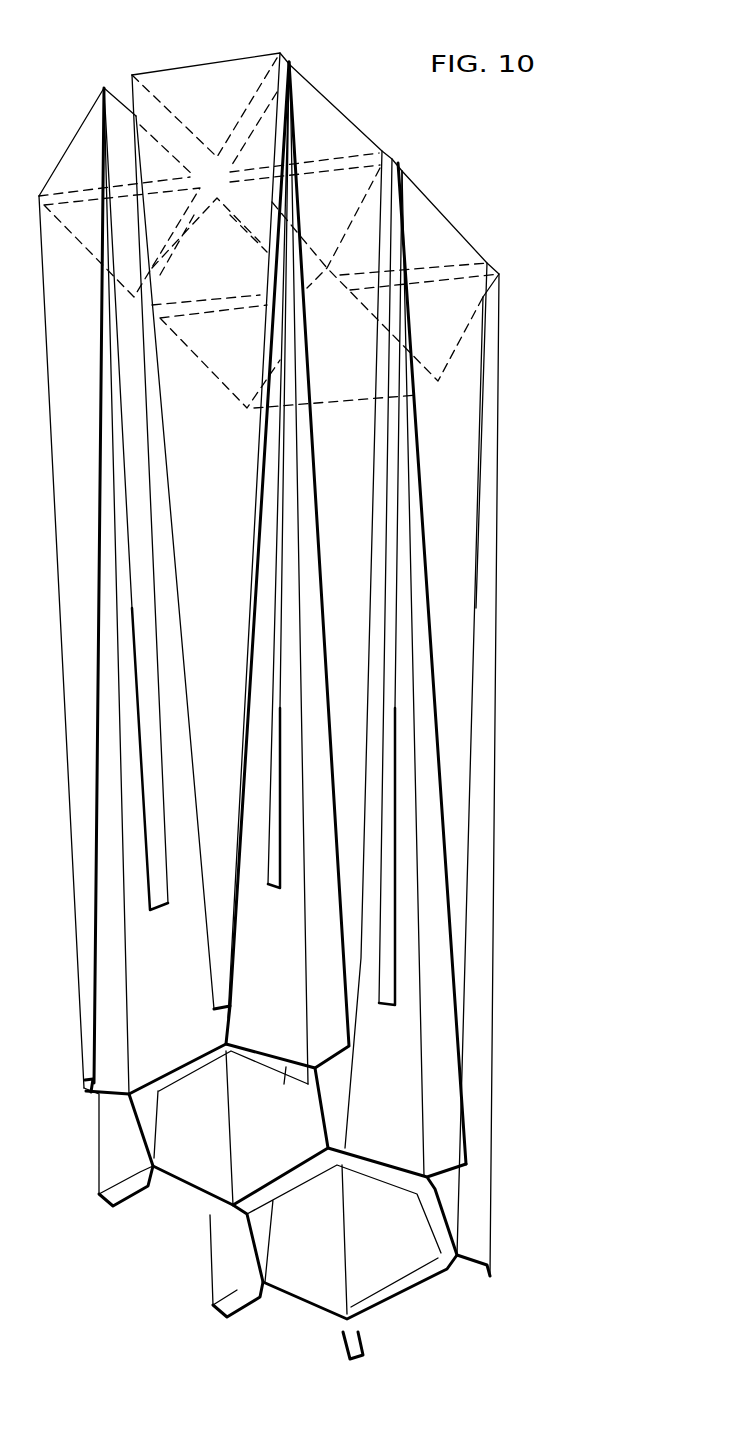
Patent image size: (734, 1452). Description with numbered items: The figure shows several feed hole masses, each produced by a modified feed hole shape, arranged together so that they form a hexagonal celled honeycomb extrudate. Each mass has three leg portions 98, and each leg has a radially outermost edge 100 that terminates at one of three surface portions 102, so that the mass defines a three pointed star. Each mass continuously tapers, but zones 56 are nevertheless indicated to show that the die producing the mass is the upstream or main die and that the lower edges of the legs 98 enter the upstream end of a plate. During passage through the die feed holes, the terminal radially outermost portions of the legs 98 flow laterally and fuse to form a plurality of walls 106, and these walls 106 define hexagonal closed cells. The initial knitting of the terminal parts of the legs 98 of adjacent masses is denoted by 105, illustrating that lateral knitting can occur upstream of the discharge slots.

The zone 56 is at (94, 1069).
The leg portion 98 is at (308, 917).
The radially outermost edge 100 is at (221, 581).
The surface portion 102 is at (81, 1093).
The initial knitting of terminal parts of legs 105 is at (156, 914).
The wall 106 is at (310, 1094).